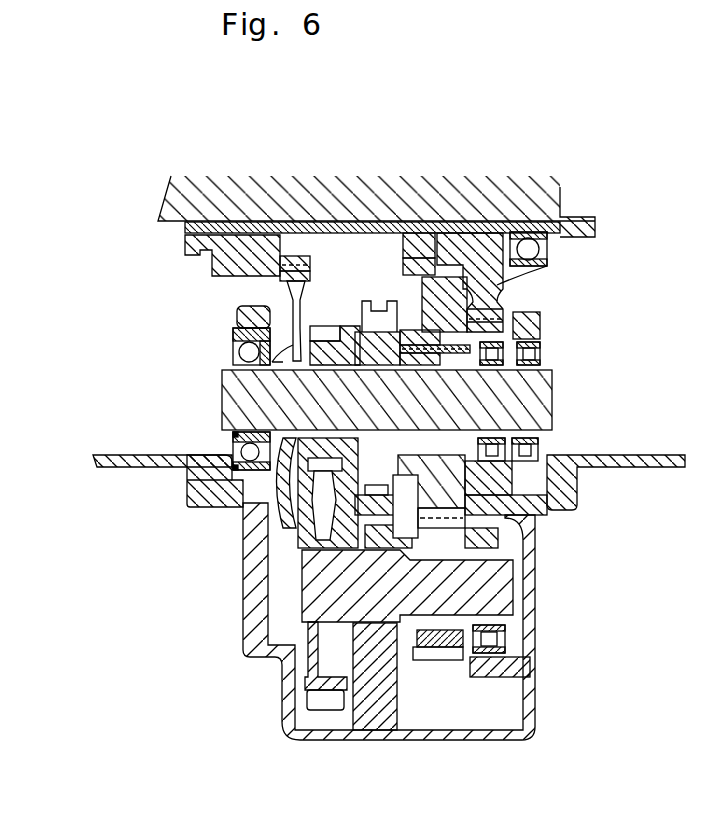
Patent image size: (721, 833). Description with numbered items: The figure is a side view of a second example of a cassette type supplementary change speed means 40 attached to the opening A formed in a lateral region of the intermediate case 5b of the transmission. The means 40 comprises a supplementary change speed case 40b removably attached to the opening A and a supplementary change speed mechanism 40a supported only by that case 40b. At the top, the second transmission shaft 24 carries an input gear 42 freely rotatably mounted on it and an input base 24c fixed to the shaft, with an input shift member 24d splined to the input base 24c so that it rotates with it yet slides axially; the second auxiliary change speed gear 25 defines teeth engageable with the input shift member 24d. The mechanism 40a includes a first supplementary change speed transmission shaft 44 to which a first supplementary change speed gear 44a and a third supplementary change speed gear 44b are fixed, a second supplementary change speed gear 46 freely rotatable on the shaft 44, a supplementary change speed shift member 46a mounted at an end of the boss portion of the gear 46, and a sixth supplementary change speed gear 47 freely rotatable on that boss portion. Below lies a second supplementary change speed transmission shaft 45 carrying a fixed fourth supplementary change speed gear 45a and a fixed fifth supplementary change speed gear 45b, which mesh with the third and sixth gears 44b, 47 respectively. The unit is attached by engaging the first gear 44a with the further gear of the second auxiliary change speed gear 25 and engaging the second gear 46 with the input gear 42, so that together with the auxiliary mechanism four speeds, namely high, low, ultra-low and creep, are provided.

The second transmission shaft 24 is at (172, 197).
The input base 24c is at (390, 228).
The input shift member 24d is at (403, 264).
The second auxiliary change speed gear 25 is at (194, 256).
The third supplementary change speed gear 44b is at (320, 322).
The supplementary change speed shift member 46a is at (385, 316).
The sixth supplementary change speed gear 47 is at (463, 289).
The input gear 42 is at (497, 285).
The second supplementary change speed gear 46 is at (513, 322).
The first supplementary change speed transmission shaft 44 is at (553, 388).
The supplementary change speed means 40 is at (50, 389).
The supplementary change speed mechanism 40a is at (203, 393).
The supplementary change speed case 40b is at (197, 497).
The opening A is at (224, 452).
The intermediate case 5b is at (623, 455).
The first supplementary change speed gear 44a is at (245, 512).
The fourth supplementary change speed gear 45a is at (310, 505).
The second supplementary change speed transmission shaft 45 is at (517, 593).
The fifth supplementary change speed gear 45b is at (442, 662).